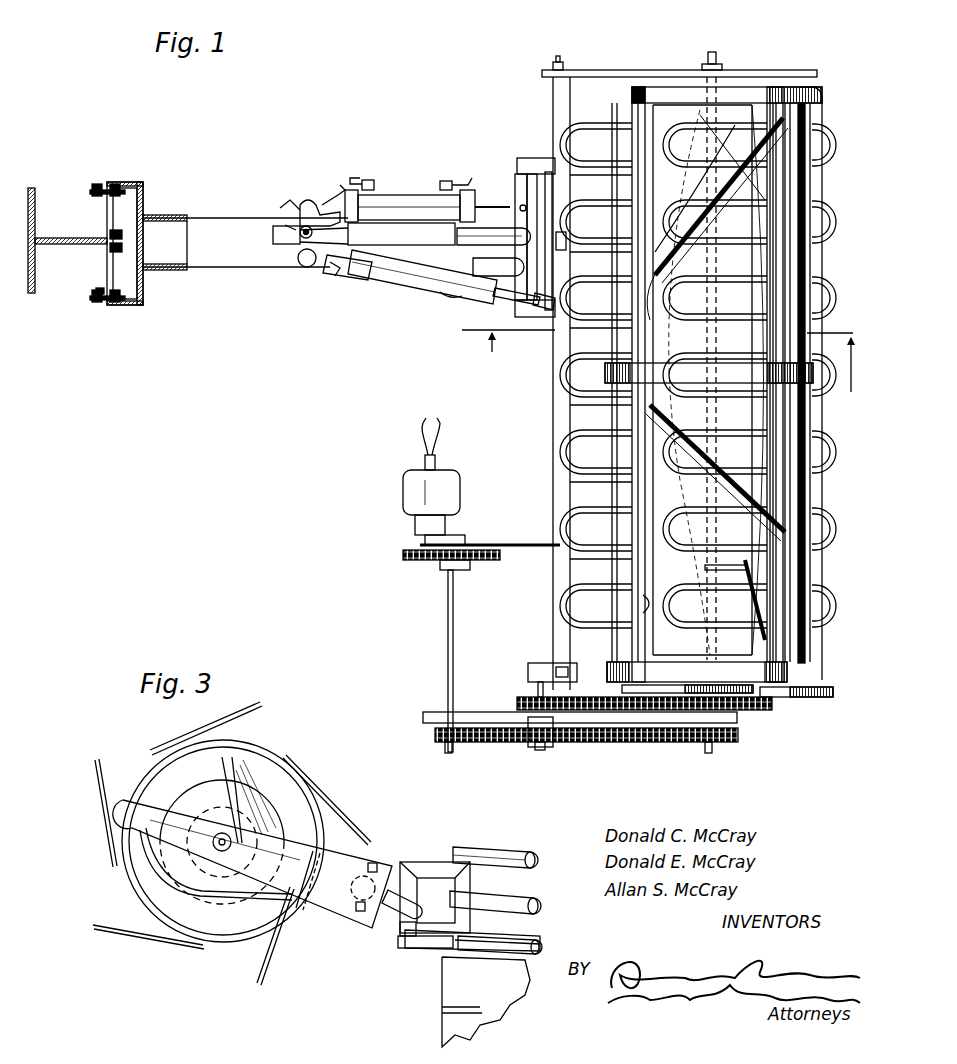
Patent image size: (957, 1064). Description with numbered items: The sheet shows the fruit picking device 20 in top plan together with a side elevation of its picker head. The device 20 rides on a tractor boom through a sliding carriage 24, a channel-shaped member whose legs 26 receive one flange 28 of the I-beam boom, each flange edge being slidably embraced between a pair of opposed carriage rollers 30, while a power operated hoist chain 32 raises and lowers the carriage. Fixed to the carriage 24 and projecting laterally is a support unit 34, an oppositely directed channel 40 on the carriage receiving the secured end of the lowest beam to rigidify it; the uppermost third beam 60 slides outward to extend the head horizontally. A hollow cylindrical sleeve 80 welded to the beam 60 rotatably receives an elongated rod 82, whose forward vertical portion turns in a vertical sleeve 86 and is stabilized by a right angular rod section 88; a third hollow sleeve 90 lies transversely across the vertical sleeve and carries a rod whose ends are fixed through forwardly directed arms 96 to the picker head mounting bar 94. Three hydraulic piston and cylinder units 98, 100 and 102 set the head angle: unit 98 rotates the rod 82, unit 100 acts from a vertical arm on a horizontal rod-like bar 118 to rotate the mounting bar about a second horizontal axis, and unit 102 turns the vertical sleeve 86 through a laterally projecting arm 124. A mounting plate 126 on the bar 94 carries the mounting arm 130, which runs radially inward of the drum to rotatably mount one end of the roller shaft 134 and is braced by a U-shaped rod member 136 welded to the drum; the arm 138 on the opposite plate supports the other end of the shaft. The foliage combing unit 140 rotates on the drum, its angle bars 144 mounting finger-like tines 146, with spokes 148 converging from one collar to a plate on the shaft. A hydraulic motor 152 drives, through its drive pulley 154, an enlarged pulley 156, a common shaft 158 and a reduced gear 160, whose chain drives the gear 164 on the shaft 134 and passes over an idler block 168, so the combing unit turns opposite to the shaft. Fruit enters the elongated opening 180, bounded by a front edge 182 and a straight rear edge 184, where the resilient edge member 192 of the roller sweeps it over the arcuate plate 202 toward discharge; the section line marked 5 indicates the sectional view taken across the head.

In FIG. 1, the fruit picking device 20 is at (452, 115).
In FIG. 1, the sliding carriage 24 is at (55, 230).
In FIG. 1, the legs 26 is at (128, 182).
In FIG. 1, the flange 28 is at (108, 265).
In FIG. 1, the carriage rollers 30 is at (108, 289).
In FIG. 1, the hoist chain 32 is at (124, 240).
In FIG. 1, the support unit 34 is at (258, 214).
In FIG. 1, the channel 40 is at (172, 271).
In FIG. 1, the third beam 60 is at (232, 269).
In FIG. 3, the third beam 60 is at (518, 998).
In FIG. 1, the cylindrical sleeve 80 is at (396, 270).
In FIG. 1, the rod 82 is at (273, 238).
In FIG. 3, the rod 82 is at (435, 952).
In FIG. 3, the vertical sleeve 86 is at (403, 935).
In FIG. 1, the right angular rod section 88 is at (488, 228).
In FIG. 3, the right angular rod section 88 is at (432, 872).
In FIG. 1, the third hollow sleeve 90 is at (564, 242).
In FIG. 1, the picker head mounting bar 94 is at (553, 404).
In FIG. 1, the forwardly directed arms 96 is at (532, 158).
In FIG. 3, the forwardly directed arms 96 is at (398, 916).
In FIG. 1, the hydraulic piston and cylinder unit 98 is at (320, 196).
In FIG. 1, the hydraulic piston and cylinder unit 100 is at (415, 292).
In FIG. 3, the hydraulic piston and cylinder unit 100 is at (490, 848).
In FIG. 1, the hydraulic piston and cylinder unit 102 is at (412, 192).
In FIG. 3, the hydraulic piston and cylinder unit 102 is at (540, 945).
In FIG. 3, the horizontal rod-like bar 118 is at (520, 903).
In FIG. 1, the laterally projecting arm 124 is at (540, 213).
In FIG. 3, the laterally projecting arm 124 is at (405, 950).
In FIG. 1, the mounting plate 126 is at (550, 68).
In FIG. 1, the mounting arm 130 is at (662, 75).
In FIG. 3, the mounting arm 130 is at (332, 908).
In FIG. 1, the roller shaft 134 is at (712, 494).
In FIG. 1, the U-shaped rod member 136 is at (750, 77).
In FIG. 3, the U-shaped rod member 136 is at (160, 778).
In FIG. 1, the arm 138 is at (483, 712).
In FIG. 1, the foliage combing unit 140 is at (820, 86).
In FIG. 1, the angle bars 144 is at (766, 110).
In FIG. 3, the angle bars 144 is at (205, 944).
In FIG. 1, the finger-like tines 146 is at (700, 160).
In FIG. 3, the finger-like tines 146 is at (356, 830).
In FIG. 1, the spokes 148 is at (792, 698).
In FIG. 1, the hydraulic motor 152 is at (410, 498).
In FIG. 1, the drive pulley 154 is at (415, 561).
In FIG. 1, the enlarged pulley 156 is at (468, 571).
In FIG. 1, the common shaft 158 is at (447, 630).
In FIG. 1, the reduced pulley or gear 160 is at (432, 740).
In FIG. 1, the gear 164 is at (712, 753).
In FIG. 1, the idler block 168 is at (527, 748).
In FIG. 1, the elongated opening 180 is at (668, 562).
In FIG. 1, the front edge 182 is at (645, 598).
In FIG. 1, the straight rear edge 184 is at (780, 292).
In FIG. 1, the resilient edge member 192 is at (652, 252).
In FIG. 3, the arcuate plate 202 is at (158, 884).
In FIG. 1, the section line 5 is at (657, 350).